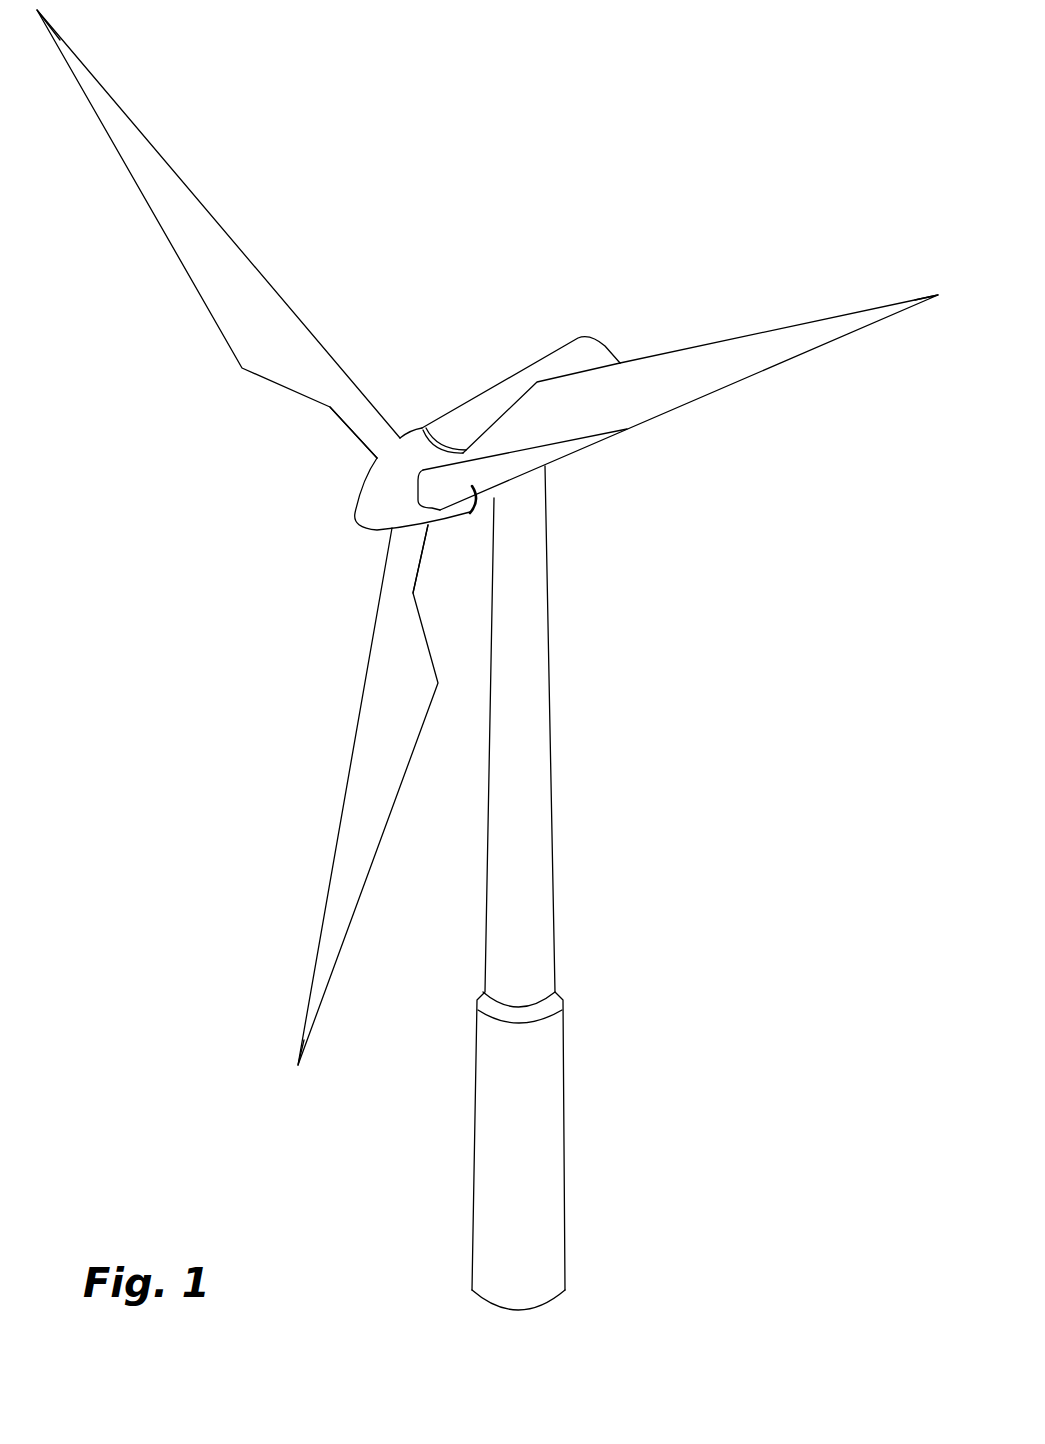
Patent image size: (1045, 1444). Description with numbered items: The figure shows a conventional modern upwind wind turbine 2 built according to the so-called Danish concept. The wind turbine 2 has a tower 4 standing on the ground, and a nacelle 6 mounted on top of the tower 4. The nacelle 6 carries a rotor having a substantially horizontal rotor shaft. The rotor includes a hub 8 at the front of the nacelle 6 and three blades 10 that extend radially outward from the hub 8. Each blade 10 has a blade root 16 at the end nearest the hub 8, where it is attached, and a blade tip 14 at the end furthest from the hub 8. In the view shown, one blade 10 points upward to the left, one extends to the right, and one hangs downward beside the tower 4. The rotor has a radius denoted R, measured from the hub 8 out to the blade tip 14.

The wind turbine 2 is at (656, 820).
The tower 4 is at (540, 735).
The nacelle 6 is at (477, 408).
The hub 8 is at (378, 500).
The blade 10 is at (253, 335).
The blade tip 14 is at (83, 70).
The blade root 16 is at (387, 452).